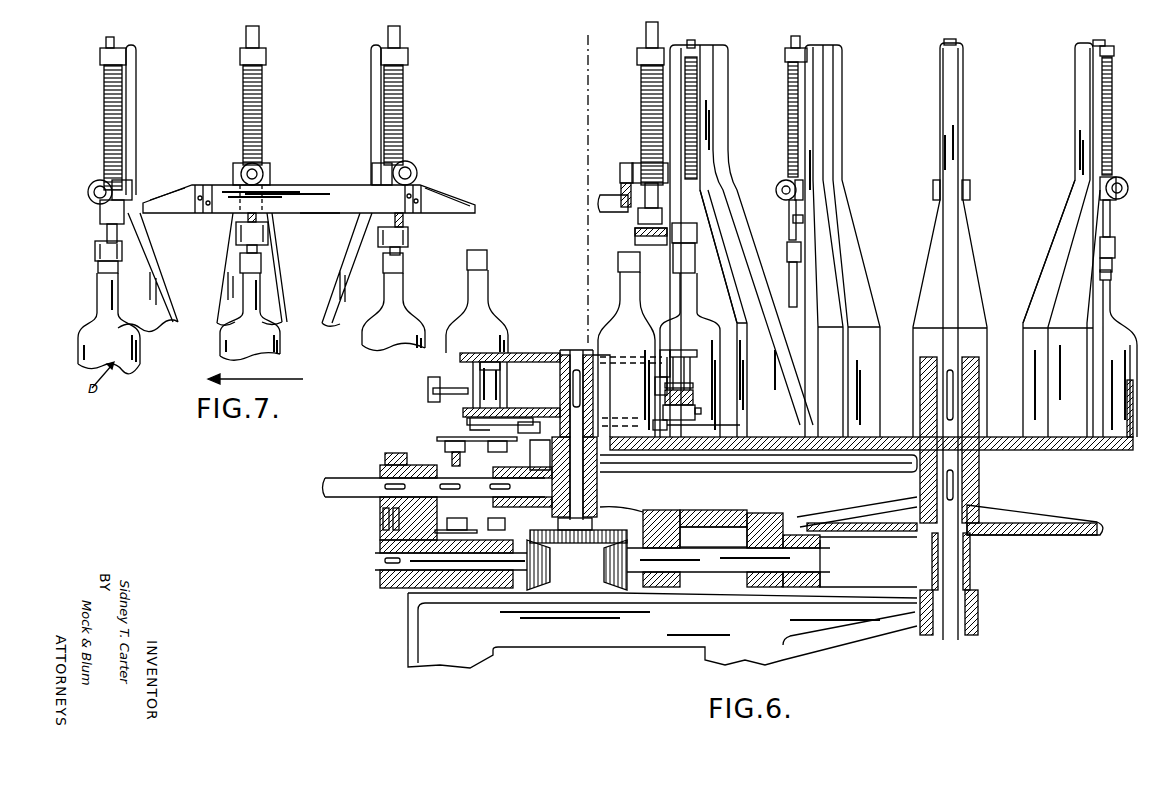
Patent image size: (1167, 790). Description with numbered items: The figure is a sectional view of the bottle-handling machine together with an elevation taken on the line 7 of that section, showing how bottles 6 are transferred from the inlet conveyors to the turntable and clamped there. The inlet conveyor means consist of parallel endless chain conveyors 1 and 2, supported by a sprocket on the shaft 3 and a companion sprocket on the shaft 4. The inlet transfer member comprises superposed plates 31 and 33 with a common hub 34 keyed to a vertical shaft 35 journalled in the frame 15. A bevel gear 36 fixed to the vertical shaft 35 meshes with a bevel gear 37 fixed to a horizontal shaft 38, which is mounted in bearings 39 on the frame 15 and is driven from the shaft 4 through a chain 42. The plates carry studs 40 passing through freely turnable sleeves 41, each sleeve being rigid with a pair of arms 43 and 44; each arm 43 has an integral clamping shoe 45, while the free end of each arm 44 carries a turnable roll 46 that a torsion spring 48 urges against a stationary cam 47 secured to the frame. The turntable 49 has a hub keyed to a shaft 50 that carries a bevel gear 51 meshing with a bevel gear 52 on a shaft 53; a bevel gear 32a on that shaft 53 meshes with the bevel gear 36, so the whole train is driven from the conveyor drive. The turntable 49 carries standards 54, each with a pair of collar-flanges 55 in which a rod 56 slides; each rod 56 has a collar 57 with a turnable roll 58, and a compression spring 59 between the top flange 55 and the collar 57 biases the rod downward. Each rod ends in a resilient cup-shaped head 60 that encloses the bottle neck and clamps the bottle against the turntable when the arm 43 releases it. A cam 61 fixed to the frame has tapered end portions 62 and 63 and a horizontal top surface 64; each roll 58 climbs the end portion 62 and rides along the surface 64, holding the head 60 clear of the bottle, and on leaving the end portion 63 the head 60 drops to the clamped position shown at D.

In FIG. 6, the endless chain conveyor 1 is at (490, 450).
In FIG. 6, the endless chain conveyor 2 is at (445, 444).
In FIG. 6, the shaft 3 is at (458, 533).
In FIG. 6, the shaft 4 is at (352, 505).
In FIG. 7, the bottle 6 is at (140, 345).
In FIG. 6, the bottle 6 is at (666, 330).
In FIG. 6, the section line 7 is at (580, 39).
In FIG. 6, the frame 15 is at (652, 472).
In FIG. 6, the plate 31 is at (460, 355).
In FIG. 6, the bevel gear 32a is at (605, 570).
In FIG. 6, the plate 33 is at (470, 428).
In FIG. 6, the hub 34 is at (560, 372).
In FIG. 6, the vertical shaft 35 is at (575, 352).
In FIG. 6, the bevel gear 36 is at (572, 543).
In FIG. 6, the bevel gear 37 is at (551, 576).
In FIG. 6, the horizontal shaft 38 is at (452, 575).
In FIG. 6, the bearing 39 is at (495, 572).
In FIG. 6, the stud 40 is at (487, 352).
In FIG. 6, the sleeve 41 is at (473, 365).
In FIG. 6, the chain 42 is at (380, 512).
In FIG. 6, the arm 43 is at (467, 420).
In FIG. 6, the arm 44 is at (437, 438).
In FIG. 6, the clamping shoe 45 is at (428, 385).
In FIG. 6, the roll 46 is at (525, 434).
In FIG. 6, the stationary cam 47 is at (670, 430).
In FIG. 6, the torsion spring 48 is at (507, 398).
In FIG. 6, the turntable 49 is at (1135, 440).
In FIG. 6, the shaft 50 is at (962, 355).
In FIG. 6, the bevel gear 51 is at (1020, 522).
In FIG. 6, the bevel gear 52 is at (822, 572).
In FIG. 6, the shaft 53 is at (712, 568).
In FIG. 7, the standard 54 is at (147, 268).
In FIG. 6, the standard 54 is at (1063, 241).
In FIG. 7, the collar-flange 55 is at (100, 53).
In FIG. 6, the collar-flange 55 is at (640, 48).
In FIG. 7, the rod 56 is at (110, 38).
In FIG. 6, the rod 56 is at (692, 40).
In FIG. 7, the collar 57 is at (130, 180).
In FIG. 6, the collar 57 is at (640, 168).
In FIG. 7, the roll 58 is at (96, 186).
In FIG. 6, the roll 58 is at (625, 165).
In FIG. 7, the compression spring 59 is at (104, 97).
In FIG. 6, the compression spring 59 is at (641, 93).
In FIG. 7, the cup-shaped head 60 is at (95, 251).
In FIG. 6, the cup-shaped head 60 is at (635, 240).
In FIG. 7, the cam 61 is at (319, 206).
In FIG. 6, the cam 61 is at (612, 210).
In FIG. 7, the end portion 62 is at (445, 196).
In FIG. 7, the end portion 63 is at (168, 198).
In FIG. 7, the horizontal top surface 64 is at (283, 186).
In FIG. 6, the horizontal top surface 64 is at (620, 178).